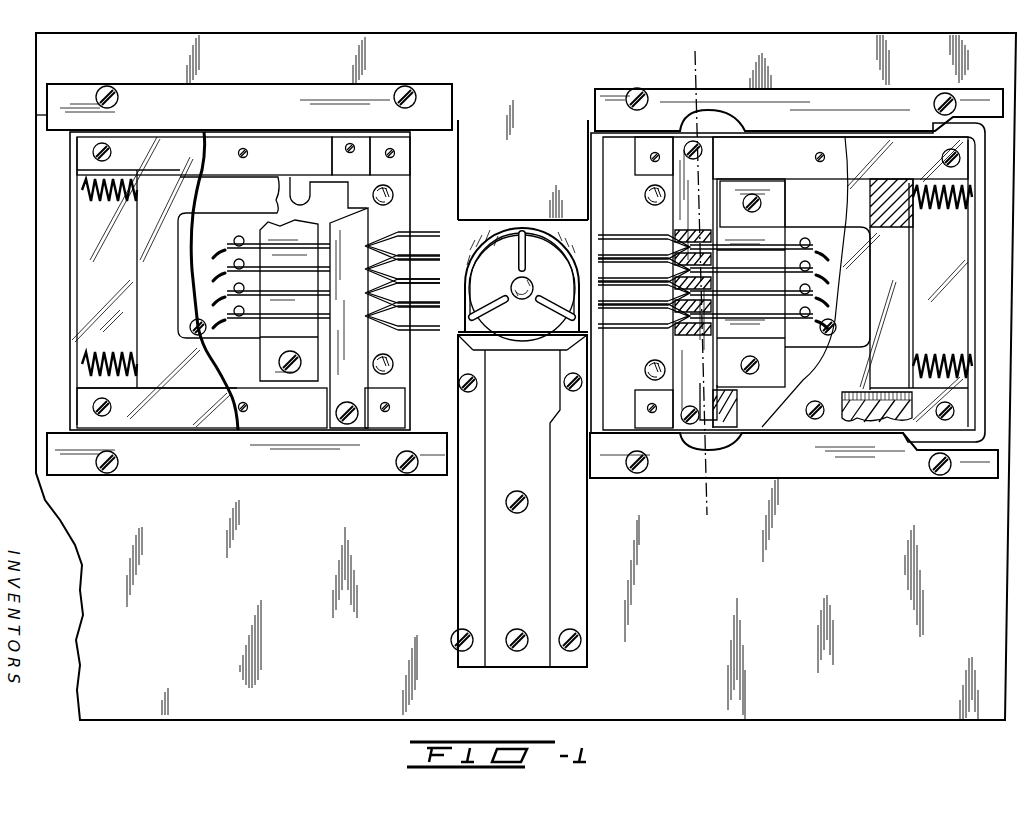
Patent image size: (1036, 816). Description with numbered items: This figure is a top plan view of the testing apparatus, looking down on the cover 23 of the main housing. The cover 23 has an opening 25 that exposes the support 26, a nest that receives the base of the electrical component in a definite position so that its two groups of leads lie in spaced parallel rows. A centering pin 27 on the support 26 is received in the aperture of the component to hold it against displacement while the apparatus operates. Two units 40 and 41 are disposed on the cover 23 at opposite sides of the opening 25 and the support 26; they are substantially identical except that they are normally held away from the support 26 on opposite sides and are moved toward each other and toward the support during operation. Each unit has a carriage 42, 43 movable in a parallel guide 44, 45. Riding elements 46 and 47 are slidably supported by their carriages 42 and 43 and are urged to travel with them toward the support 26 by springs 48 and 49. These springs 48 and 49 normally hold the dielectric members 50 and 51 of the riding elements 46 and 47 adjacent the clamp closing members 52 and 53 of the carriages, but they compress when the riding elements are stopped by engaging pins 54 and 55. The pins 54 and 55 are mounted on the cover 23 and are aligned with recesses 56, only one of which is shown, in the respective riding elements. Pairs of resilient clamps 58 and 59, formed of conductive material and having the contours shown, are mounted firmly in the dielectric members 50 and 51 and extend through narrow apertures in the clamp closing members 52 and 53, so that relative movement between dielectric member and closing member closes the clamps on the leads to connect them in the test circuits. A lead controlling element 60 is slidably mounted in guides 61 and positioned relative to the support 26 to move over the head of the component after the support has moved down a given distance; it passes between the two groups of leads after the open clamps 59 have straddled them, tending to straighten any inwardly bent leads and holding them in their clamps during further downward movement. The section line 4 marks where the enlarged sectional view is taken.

The cover 23 is at (913, 720).
The section line 4— 4 is at (695, 58).
The opening 25 is at (460, 157).
The support 26 is at (522, 334).
The centering pin 27 is at (527, 281).
The unit 40 is at (206, 435).
The unit 41 is at (793, 445).
The carriage 42 is at (283, 140).
The carriage 43 is at (790, 147).
The guide 44 is at (220, 93).
The guide 45 is at (798, 92).
The riding element 46 is at (255, 185).
The riding element 47 is at (797, 186).
The spring 48 is at (113, 204).
The spring 49 is at (945, 202).
The dielectric member 50 is at (262, 346).
The dielectric member 51 is at (738, 188).
The clamp closing member 52 is at (365, 341).
The clamp closing member 53 is at (678, 319).
The pin 54 is at (394, 195).
The pin 55 is at (645, 193).
The recess 56 is at (303, 186).
The resilient clamps 58 is at (418, 246).
The resilient clamps 59 is at (628, 248).
The lead controlling element 60 is at (490, 460).
The guides 61 is at (555, 559).